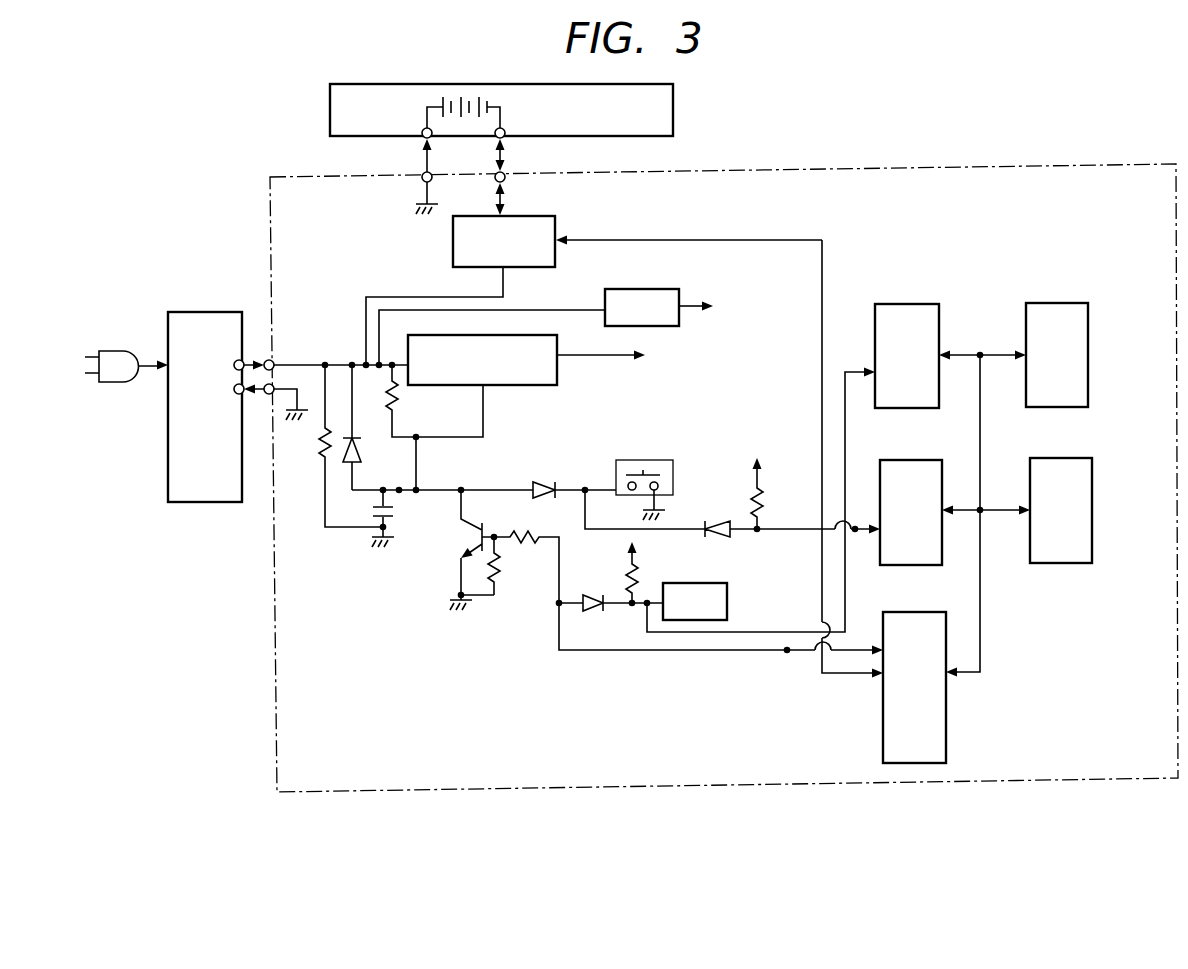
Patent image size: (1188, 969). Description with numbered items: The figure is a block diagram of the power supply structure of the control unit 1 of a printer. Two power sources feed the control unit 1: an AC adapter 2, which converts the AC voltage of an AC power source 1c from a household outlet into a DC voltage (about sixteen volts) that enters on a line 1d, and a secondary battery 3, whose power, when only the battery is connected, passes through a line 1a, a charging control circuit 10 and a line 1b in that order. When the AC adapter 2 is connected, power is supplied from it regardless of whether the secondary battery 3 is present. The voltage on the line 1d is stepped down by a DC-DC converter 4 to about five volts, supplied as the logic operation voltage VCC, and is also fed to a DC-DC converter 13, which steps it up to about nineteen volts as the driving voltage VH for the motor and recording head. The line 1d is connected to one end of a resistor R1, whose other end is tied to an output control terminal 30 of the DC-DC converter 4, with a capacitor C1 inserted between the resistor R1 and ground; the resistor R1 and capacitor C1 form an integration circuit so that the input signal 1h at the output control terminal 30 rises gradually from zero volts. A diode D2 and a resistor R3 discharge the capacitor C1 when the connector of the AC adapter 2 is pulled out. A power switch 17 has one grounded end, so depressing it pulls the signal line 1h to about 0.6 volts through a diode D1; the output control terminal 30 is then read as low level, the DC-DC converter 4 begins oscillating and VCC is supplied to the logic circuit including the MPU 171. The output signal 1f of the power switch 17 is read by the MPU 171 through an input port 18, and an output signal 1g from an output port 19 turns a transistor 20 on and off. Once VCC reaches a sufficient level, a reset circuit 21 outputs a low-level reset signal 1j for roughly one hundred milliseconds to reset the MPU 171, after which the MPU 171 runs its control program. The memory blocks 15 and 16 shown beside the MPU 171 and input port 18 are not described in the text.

The control unit 1 is at (1068, 164).
The line 1a is at (498, 198).
The line 1b is at (511, 280).
The AC power source 1c is at (148, 356).
The line 1d is at (287, 362).
The output signal 1f is at (855, 535).
The output signal 1g is at (787, 653).
The input signal 1h is at (400, 492).
The reset signal 1j is at (614, 611).
The AC adapter 2 is at (215, 312).
The secondary battery 3 is at (673, 100).
The DC-DC converter 4 is at (543, 376).
The charging control circuit 10 is at (453, 245).
The DC-DC converter 13 is at (661, 289).
The memory 15 is at (1064, 303).
The memory 16 is at (1069, 460).
The power switch 17 is at (654, 460).
The input port 18 is at (918, 460).
The output port 19 is at (920, 612).
The transistor 20 is at (484, 525).
The reset circuit 21 is at (727, 588).
The output control terminal 30 is at (545, 400).
The MPU 171 is at (913, 304).
The resistor R1 is at (422, 401).
The resistor R3 is at (339, 446).
The diode D1 is at (542, 473).
The diode D2 is at (367, 427).
The capacitor C1 is at (397, 515).